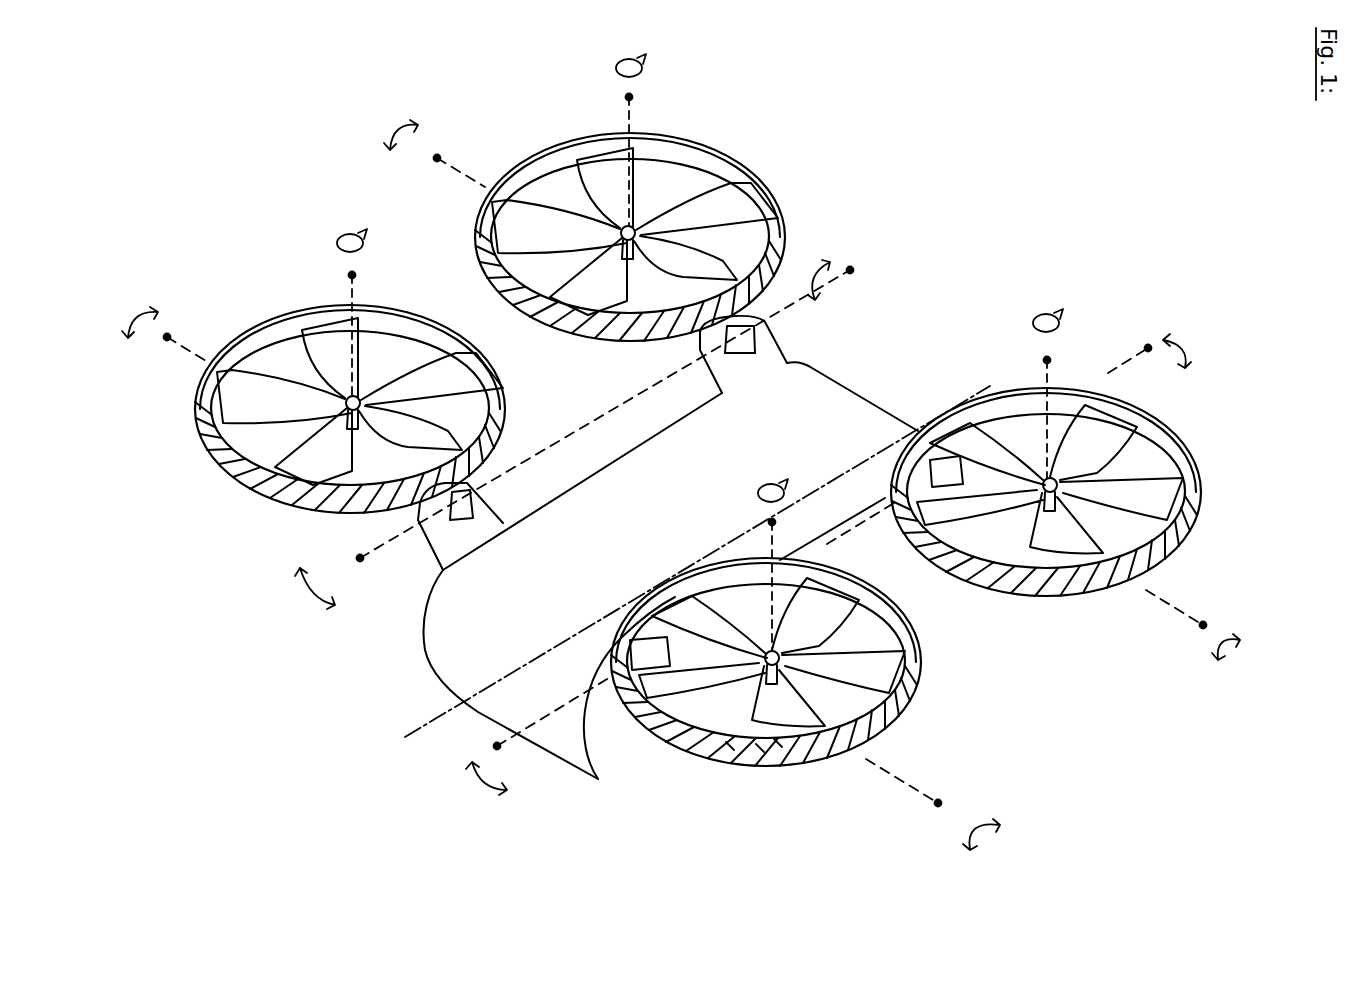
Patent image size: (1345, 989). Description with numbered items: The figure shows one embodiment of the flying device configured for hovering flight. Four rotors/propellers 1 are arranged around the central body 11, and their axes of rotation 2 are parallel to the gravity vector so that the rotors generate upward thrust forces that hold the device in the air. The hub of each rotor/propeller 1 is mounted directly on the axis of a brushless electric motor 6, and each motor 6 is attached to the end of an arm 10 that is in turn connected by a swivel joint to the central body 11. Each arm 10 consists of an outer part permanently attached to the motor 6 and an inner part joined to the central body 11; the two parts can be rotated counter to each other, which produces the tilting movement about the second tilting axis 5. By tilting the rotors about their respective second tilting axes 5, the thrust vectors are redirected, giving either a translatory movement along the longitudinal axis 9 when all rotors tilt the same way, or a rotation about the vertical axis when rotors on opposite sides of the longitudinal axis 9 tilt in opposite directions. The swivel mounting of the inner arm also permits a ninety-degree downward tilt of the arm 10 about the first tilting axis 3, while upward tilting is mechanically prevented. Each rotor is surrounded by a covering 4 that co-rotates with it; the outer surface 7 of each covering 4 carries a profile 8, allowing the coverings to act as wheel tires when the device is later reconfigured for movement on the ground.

The rotors/propellers 1 is at (396, 387).
The axes of rotation 2 is at (630, 97).
The first tilting axis 3 is at (1148, 348).
The coverings 4 is at (700, 160).
The second tilting axis 5 is at (167, 337).
The brushless electric motors 6 is at (632, 267).
The outer surfaces 7 is at (650, 323).
The profile 8 is at (776, 746).
The longitudinal axis 9 is at (442, 715).
The arm 10 is at (980, 478).
The central body 11 is at (458, 636).